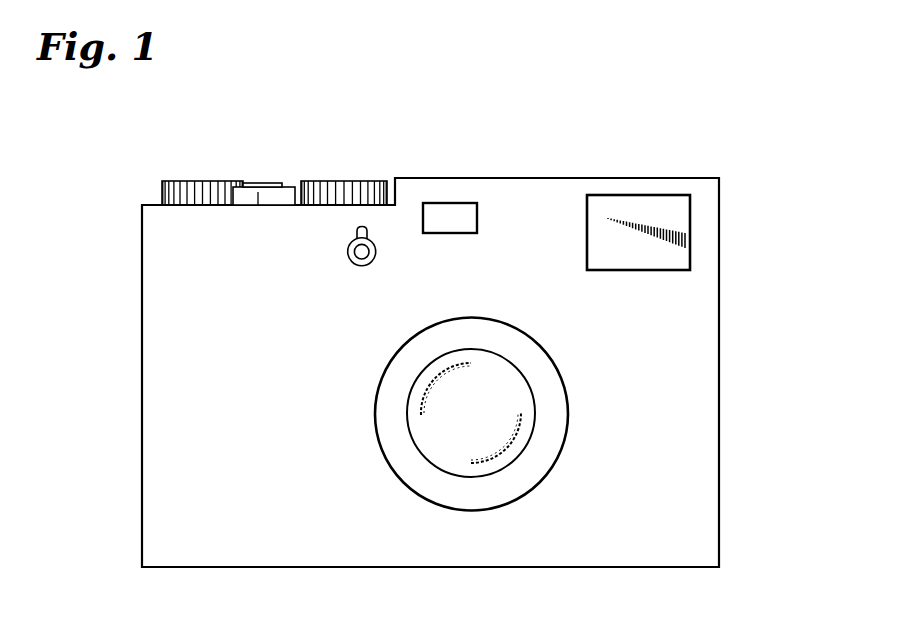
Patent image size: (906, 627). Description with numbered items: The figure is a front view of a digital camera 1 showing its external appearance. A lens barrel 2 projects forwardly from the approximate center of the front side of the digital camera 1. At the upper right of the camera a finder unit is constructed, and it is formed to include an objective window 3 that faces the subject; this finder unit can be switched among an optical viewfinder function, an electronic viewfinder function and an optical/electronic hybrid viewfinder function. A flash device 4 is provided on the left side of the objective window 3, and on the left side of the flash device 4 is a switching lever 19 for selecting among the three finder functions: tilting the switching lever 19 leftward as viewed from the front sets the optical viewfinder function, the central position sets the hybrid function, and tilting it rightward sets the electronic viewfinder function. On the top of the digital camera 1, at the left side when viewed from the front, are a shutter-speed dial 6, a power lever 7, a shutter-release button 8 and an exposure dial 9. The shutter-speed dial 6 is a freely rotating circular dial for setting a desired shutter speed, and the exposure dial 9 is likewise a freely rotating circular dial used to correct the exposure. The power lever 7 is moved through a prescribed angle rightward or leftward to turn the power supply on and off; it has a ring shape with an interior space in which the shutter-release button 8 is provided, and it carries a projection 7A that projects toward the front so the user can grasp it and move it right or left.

The digital camera 1 is at (738, 120).
The lens barrel 2 is at (570, 423).
The objective window 3 is at (623, 263).
The flash device 4 is at (452, 220).
The shutter-speed dial 6 is at (347, 190).
The power lever 7 is at (285, 187).
The projection 7A is at (265, 198).
The shutter-release button 8 is at (267, 186).
The exposure dial 9 is at (200, 189).
The switching lever 19 is at (349, 263).